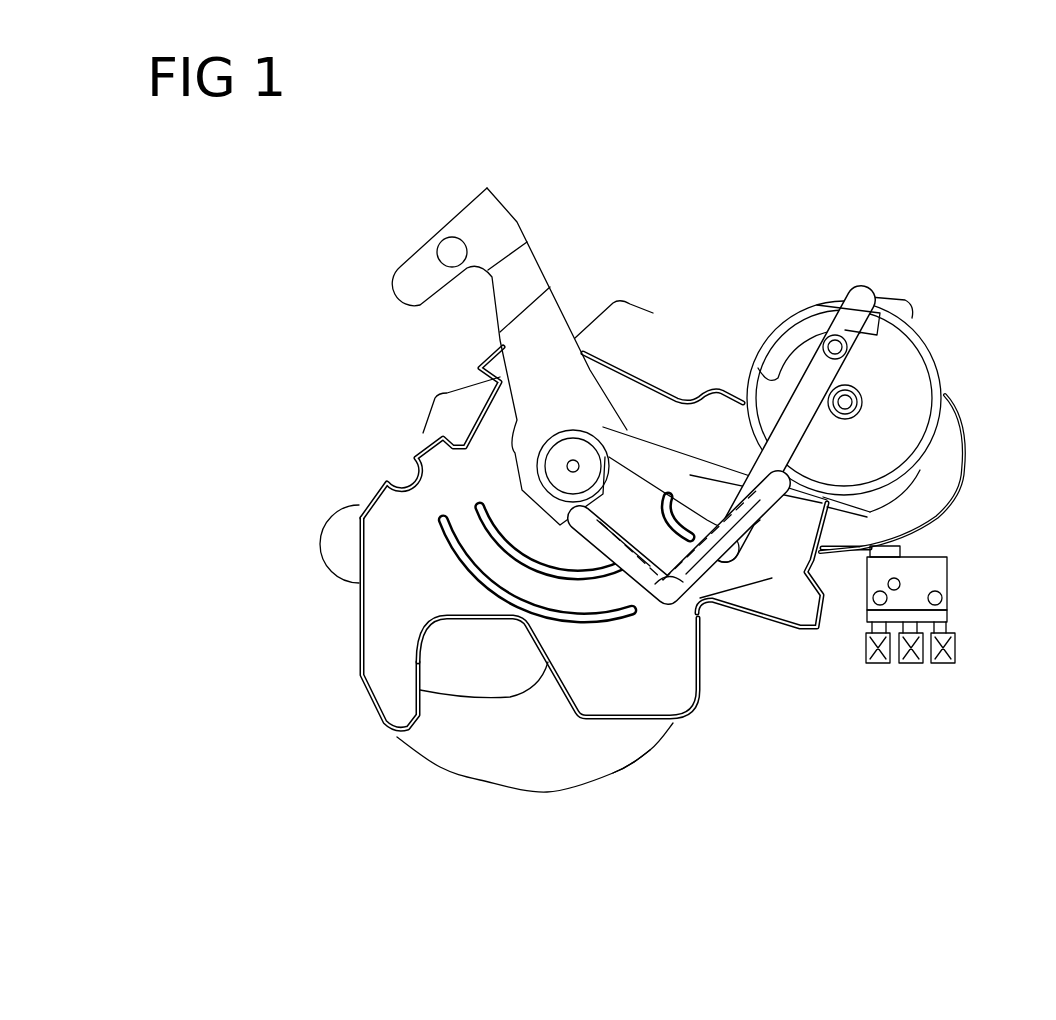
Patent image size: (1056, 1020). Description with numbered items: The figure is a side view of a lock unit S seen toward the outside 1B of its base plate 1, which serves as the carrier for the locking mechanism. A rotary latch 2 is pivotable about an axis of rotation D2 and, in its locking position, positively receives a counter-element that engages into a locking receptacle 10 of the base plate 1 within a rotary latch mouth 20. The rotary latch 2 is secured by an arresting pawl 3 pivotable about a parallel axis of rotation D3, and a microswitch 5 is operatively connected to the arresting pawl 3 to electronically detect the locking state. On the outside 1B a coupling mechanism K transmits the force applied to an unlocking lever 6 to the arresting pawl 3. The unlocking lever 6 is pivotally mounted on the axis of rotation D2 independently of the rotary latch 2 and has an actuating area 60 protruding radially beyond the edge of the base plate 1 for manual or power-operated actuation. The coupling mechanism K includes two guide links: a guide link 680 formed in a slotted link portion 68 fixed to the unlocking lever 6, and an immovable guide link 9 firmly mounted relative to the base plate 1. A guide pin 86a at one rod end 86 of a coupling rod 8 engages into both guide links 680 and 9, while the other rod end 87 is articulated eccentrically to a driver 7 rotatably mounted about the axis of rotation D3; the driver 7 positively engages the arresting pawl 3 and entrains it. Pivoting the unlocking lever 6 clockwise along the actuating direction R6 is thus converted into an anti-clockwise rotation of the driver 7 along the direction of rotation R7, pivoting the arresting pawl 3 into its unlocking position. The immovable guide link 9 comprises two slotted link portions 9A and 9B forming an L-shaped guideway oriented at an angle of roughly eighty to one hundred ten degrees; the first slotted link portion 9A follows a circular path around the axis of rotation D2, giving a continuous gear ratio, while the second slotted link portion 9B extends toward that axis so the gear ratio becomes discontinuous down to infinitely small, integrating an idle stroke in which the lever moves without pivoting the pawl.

The base plate 1 is at (378, 462).
The outside of the base plate 1B is at (382, 614).
The locking receptacle 10 is at (440, 662).
The rotary latch mouth 20 is at (510, 697).
The rotary latch 2 is at (646, 788).
The arresting pawl 3 is at (960, 438).
The microswitch 5 is at (947, 600).
The unlocking lever 6 is at (487, 182).
The actuating area 60 is at (418, 272).
The slotted link portion 68 is at (642, 425).
The guide link 680 is at (662, 478).
The driver 7 is at (832, 298).
The rod end 87 is at (838, 340).
The coupling rod 8 is at (772, 415).
The rod end 86 is at (735, 542).
The guide pin 86a is at (727, 556).
The guide link 9 is at (688, 616).
The slotted link portion 9A is at (768, 535).
The slotted link portion 9B is at (630, 576).
The coupling mechanism K is at (764, 580).
The axis of rotation D2 is at (571, 464).
The axis of rotation D3 is at (852, 408).
The actuating direction R6 is at (585, 173).
The direction of rotation R7 is at (980, 380).
The lock unit S is at (930, 226).